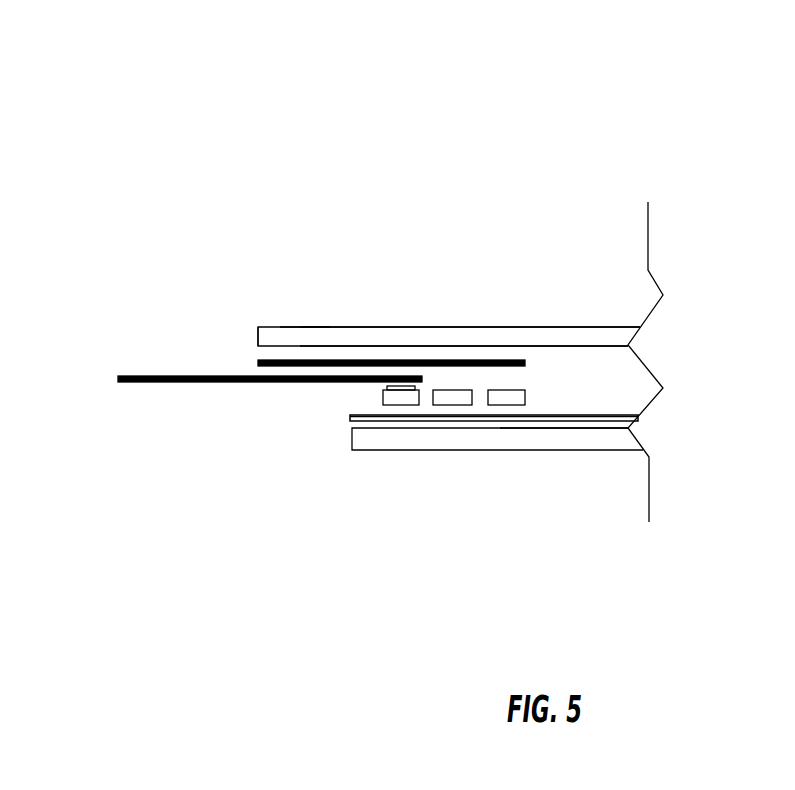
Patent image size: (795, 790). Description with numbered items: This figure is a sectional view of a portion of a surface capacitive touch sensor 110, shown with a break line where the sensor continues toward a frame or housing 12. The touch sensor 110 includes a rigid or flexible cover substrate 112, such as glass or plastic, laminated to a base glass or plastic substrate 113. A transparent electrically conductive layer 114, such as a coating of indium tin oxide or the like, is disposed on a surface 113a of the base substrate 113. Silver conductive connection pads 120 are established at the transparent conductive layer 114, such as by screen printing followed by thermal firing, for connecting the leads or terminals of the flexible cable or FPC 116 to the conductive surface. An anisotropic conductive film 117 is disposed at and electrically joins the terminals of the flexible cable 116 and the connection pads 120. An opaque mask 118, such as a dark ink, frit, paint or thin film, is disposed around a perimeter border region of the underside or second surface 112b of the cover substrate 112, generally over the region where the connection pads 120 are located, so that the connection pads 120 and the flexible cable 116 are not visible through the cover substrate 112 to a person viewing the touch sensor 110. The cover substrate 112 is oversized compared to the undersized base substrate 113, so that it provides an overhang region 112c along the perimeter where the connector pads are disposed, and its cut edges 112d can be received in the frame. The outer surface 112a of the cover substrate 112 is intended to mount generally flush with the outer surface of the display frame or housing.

The housing 12 is at (711, 362).
The surface capacitive touch sensor 110 is at (451, 232).
The cover substrate 112 is at (258, 333).
The outer surface of cover substrate 112a is at (430, 327).
The second surface of cover substrate 112b is at (562, 346).
The overhang region 112c is at (308, 314).
The cut edges of cover substrate 112d is at (258, 339).
The base substrate 113 is at (352, 447).
The surface of base substrate 113a is at (608, 429).
The transparent electrically conductive layer 114 is at (350, 416).
The flexible cable 116 is at (118, 378).
The anisotropic conductive film 117 is at (405, 388).
The opaque mask 118 is at (258, 363).
The connection pads 120 is at (505, 405).